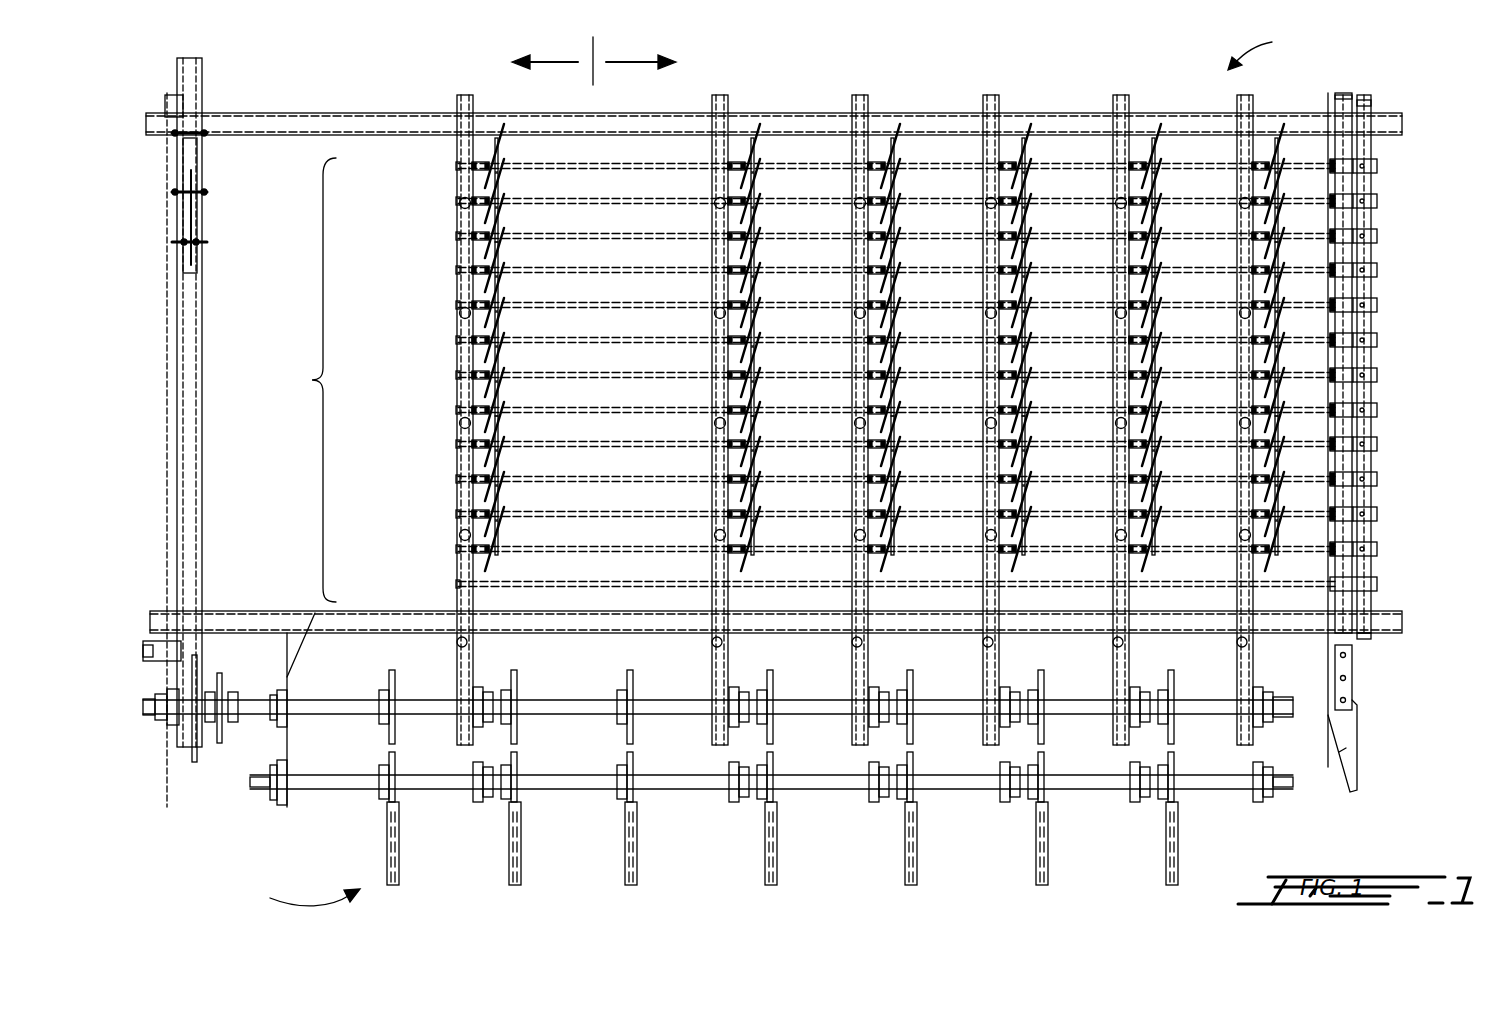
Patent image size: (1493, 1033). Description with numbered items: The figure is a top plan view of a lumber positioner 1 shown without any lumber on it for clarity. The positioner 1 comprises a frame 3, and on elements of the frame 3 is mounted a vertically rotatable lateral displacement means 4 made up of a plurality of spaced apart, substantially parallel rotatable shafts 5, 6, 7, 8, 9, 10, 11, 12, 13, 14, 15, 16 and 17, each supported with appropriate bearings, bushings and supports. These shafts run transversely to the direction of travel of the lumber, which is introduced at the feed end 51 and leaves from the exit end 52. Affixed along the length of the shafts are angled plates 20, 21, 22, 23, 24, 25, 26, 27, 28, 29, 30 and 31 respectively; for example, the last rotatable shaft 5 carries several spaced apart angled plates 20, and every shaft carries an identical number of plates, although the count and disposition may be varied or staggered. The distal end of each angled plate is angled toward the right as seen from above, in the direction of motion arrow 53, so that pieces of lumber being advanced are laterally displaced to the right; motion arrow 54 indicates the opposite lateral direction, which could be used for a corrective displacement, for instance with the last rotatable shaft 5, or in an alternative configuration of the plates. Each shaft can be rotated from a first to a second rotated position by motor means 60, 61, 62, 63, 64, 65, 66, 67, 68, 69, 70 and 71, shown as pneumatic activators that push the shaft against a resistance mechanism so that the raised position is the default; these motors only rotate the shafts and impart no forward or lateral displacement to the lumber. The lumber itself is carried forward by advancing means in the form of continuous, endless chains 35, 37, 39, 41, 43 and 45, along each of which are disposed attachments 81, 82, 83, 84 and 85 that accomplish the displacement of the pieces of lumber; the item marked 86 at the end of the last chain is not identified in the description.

The lumber positioner 1 is at (1024, 82).
The frame 3 is at (283, 122).
The vertically rotatable lateral displacement means 4 is at (309, 380).
The rotatable shaft 5 is at (456, 166).
The rotatable shaft 6 is at (456, 201).
The rotatable shaft 7 is at (456, 236).
The rotatable shaft 8 is at (456, 270).
The rotatable shaft 9 is at (456, 305).
The rotatable shaft 10 is at (456, 340).
The rotatable shaft 11 is at (456, 375).
The rotatable shaft 12 is at (456, 410).
The rotatable shaft 13 is at (456, 444).
The rotatable shaft 14 is at (456, 479).
The rotatable shaft 15 is at (456, 514).
The rotatable shaft 16 is at (456, 549).
The rotatable shaft 17 is at (456, 584).
The angled plate 20 is at (512, 153).
The angled plate 21 is at (512, 188).
The angled plate 22 is at (512, 223).
The angled plate 23 is at (512, 255).
The angled plate 24 is at (512, 293).
The angled plate 25 is at (512, 328).
The angled plate 26 is at (512, 362).
The angled plate 27 is at (512, 396).
The angled plate 28 is at (512, 430).
The angled plate 29 is at (512, 466).
The angled plate 30 is at (512, 500).
The angled plate 31 is at (512, 534).
The continuous chain 35 is at (458, 652).
The continuous chain 37 is at (713, 652).
The continuous chain 39 is at (853, 652).
The continuous chain 41 is at (984, 652).
The continuous chain 43 is at (1114, 652).
The continuous chain 45 is at (1238, 652).
The feed end 51 is at (296, 899).
The exit end 52 is at (1268, 49).
The motion arrow 53 is at (641, 52).
The motion arrow 54 is at (545, 52).
The motor means 60 is at (1380, 166).
The motor means 61 is at (1380, 201).
The motor means 62 is at (1380, 236).
The motor means 63 is at (1380, 270).
The motor means 64 is at (1380, 305).
The motor means 65 is at (1380, 340).
The motor means 66 is at (1380, 375).
The motor means 67 is at (1380, 410).
The motor means 68 is at (1380, 444).
The motor means 69 is at (1380, 479).
The motor means 70 is at (1380, 514).
The motor means 71 is at (1380, 549).
The attachment 81 is at (468, 642).
The attachment 82 is at (459, 535).
The attachment 83 is at (459, 423).
The attachment 84 is at (459, 313).
The attachment 85 is at (459, 203).
The pivot pin 86 is at (1248, 642).